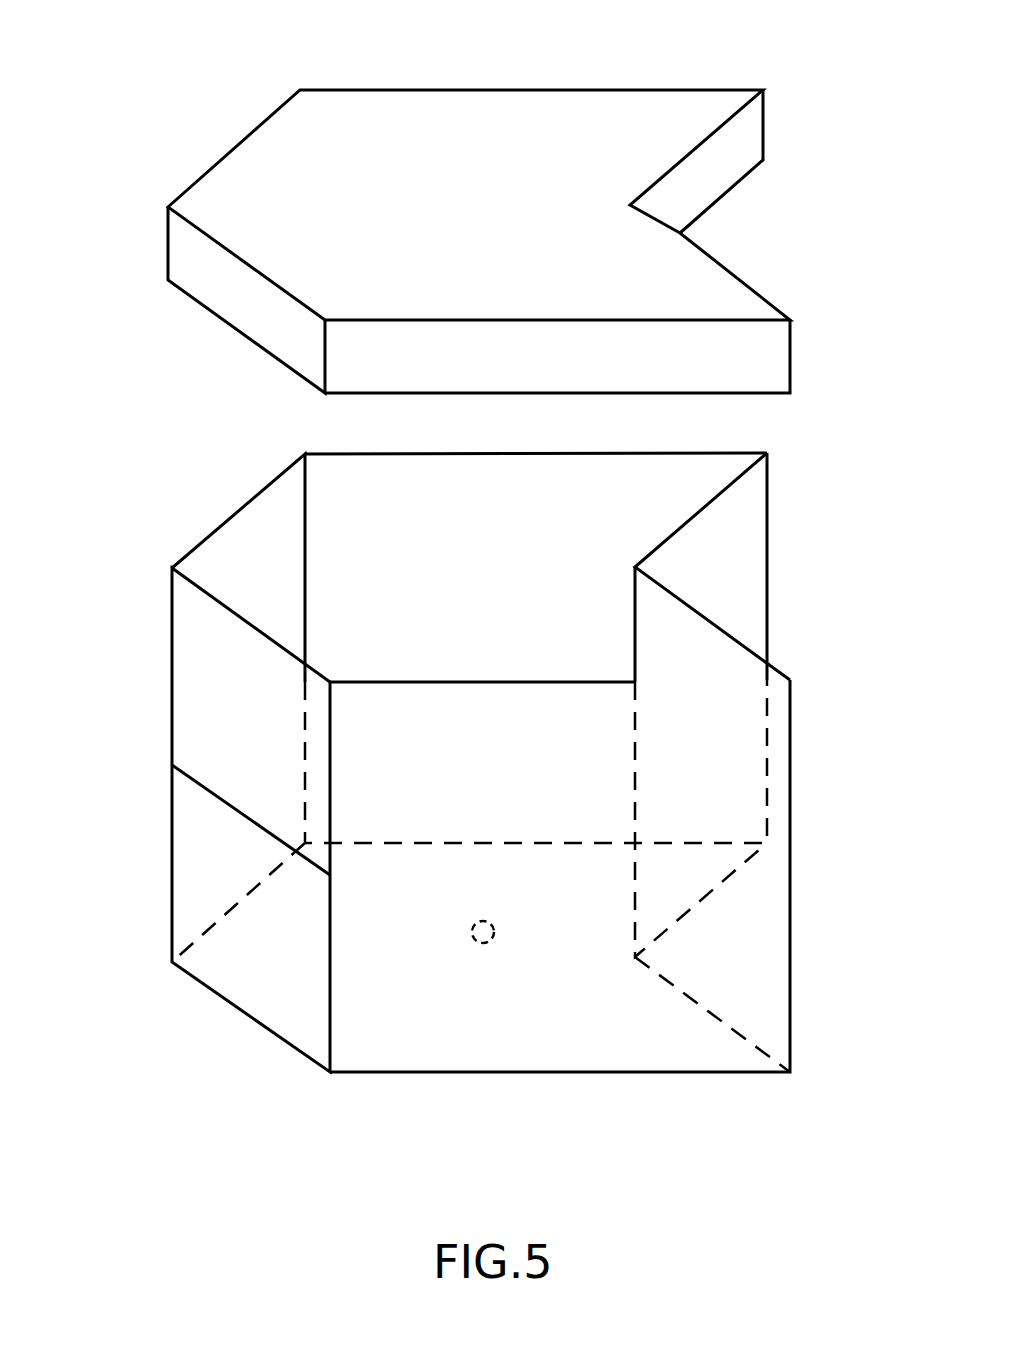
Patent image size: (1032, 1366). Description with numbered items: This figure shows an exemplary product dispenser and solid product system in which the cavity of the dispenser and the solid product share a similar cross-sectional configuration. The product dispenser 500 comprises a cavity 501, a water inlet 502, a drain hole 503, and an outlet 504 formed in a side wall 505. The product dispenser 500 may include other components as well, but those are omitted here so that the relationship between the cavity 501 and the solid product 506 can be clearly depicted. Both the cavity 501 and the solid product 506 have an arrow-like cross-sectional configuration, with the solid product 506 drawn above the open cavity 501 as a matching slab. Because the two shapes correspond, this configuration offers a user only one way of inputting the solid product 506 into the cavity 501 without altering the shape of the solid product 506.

The product dispenser 500 is at (750, 1114).
The cavity 501 is at (650, 470).
The water inlet 502 is at (735, 578).
The drain hole 503 is at (481, 936).
The outlet 504 is at (210, 732).
The side wall 505 is at (222, 872).
The solid product 506 is at (625, 110).